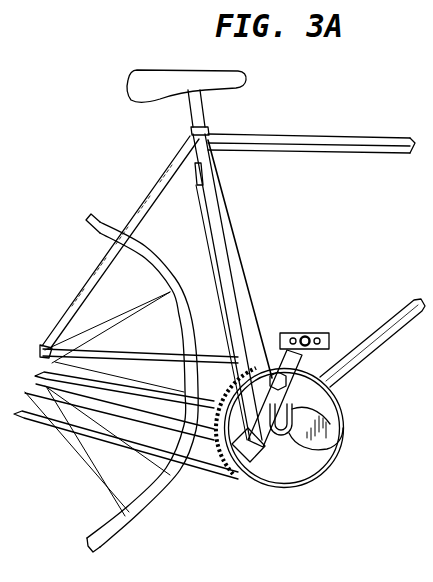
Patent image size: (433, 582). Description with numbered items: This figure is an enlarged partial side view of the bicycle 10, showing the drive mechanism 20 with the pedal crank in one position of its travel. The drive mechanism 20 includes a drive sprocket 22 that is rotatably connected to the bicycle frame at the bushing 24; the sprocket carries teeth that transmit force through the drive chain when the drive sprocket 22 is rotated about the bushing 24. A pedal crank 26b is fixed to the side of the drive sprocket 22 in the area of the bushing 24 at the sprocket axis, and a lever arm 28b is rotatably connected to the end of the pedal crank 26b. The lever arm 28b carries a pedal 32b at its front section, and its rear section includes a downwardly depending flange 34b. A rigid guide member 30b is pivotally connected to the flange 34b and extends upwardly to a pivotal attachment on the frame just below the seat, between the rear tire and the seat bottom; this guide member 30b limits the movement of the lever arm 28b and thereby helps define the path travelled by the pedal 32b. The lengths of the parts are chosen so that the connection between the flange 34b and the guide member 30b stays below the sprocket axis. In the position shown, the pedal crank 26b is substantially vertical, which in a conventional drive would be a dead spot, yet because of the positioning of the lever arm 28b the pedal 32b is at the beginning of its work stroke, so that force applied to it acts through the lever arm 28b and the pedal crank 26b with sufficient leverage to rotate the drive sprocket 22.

The bicycle 10 is at (370, 119).
The drive mechanism 20 is at (263, 497).
The drive sprocket 22 is at (298, 465).
The bushing 24 is at (340, 446).
The pedal crank 26b is at (322, 400).
The lever arm 28b is at (248, 304).
The guide member 30b is at (196, 203).
The pedal 32b is at (311, 331).
The flange 34b is at (233, 480).